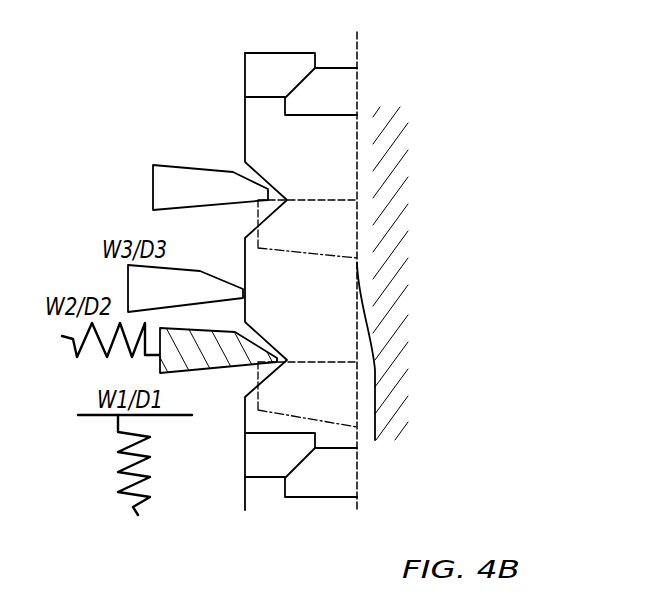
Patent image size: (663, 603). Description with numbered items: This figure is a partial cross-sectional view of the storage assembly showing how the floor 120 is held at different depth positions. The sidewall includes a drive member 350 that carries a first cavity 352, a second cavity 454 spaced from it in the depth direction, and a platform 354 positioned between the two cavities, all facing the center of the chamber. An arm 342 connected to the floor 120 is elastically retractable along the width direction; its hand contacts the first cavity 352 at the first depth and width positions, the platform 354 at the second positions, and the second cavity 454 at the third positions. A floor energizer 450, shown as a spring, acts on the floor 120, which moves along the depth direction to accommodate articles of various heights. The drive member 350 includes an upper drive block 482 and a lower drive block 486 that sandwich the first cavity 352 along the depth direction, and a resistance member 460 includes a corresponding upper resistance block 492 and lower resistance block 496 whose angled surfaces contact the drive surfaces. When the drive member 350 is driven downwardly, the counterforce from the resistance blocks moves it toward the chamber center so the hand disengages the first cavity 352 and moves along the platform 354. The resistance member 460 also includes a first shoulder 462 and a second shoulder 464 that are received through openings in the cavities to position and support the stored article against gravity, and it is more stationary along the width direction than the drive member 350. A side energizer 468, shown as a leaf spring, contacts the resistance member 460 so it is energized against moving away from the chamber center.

The floor 120 is at (80, 417).
The arm 342 is at (198, 354).
The drive member 350 is at (309, 50).
The first cavity 352 is at (248, 378).
The platform 354 is at (243, 263).
The floor energizer 450 is at (113, 508).
The second cavity 454 is at (252, 214).
The resistance member 460 is at (333, 53).
The first shoulder 462 is at (332, 398).
The second shoulder 464 is at (330, 235).
The side energizer 468 is at (375, 413).
The drive block 482 is at (273, 72).
The lower drive block 486 is at (263, 462).
The resistance block 492 is at (342, 80).
The lower resistance block 496 is at (342, 476).